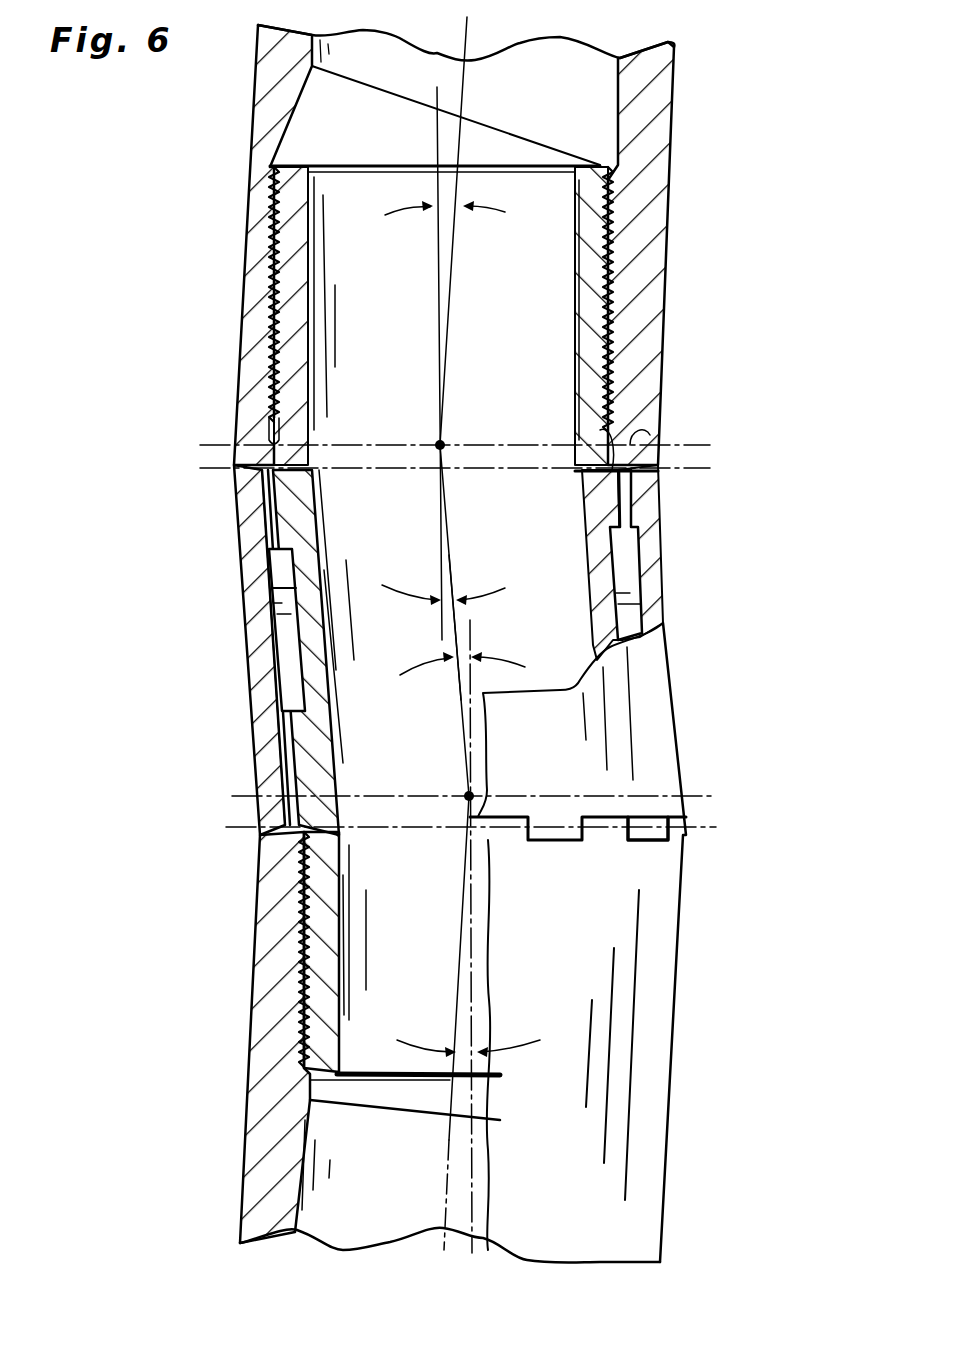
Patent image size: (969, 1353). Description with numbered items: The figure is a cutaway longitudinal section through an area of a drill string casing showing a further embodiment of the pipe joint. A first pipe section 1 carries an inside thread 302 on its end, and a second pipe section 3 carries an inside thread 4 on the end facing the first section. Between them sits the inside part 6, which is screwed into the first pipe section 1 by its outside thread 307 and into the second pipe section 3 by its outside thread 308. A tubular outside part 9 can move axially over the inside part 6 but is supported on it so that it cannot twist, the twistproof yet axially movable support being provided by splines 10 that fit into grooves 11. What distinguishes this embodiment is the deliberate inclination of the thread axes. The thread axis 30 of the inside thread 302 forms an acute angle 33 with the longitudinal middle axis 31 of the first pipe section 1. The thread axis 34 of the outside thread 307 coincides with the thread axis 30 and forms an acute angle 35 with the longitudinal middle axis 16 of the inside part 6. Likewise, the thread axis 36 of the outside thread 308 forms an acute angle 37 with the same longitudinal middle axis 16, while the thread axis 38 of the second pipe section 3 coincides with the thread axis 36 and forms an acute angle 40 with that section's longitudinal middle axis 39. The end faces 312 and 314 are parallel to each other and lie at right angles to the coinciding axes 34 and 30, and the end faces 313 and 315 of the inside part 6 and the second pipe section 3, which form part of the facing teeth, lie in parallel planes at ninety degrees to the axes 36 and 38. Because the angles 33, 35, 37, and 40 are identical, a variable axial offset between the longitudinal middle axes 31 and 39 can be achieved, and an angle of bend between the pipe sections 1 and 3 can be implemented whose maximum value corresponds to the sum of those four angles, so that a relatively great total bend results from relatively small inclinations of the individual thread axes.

The first pipe section 1 is at (673, 160).
The second pipe section 3 is at (663, 1150).
The inside thread 4 is at (300, 947).
The inside part 6 is at (317, 518).
The tubular outside part 9 is at (250, 633).
The spline 10 is at (623, 577).
The groove 11 is at (265, 502).
The longitudinal middle axis 16 is at (450, 525).
The thread axis 30 is at (432, 232).
The longitudinal middle axis 31 is at (467, 75).
The acute angle 33 is at (437, 160).
The thread axis 34 is at (437, 612).
The acute angle 35 is at (455, 590).
The thread axis 36 is at (480, 752).
The acute angle 37 is at (455, 662).
The thread axis 38 is at (467, 975).
The longitudinal middle axis 39 is at (445, 1180).
The acute angle 40 is at (452, 1078).
The inside thread 302 is at (615, 322).
The outside thread 307 is at (280, 286).
The outside thread 308 is at (305, 880).
The end face 312 is at (620, 475).
The end face 313 is at (648, 830).
The end face 314 is at (630, 445).
The end face 315 is at (613, 835).